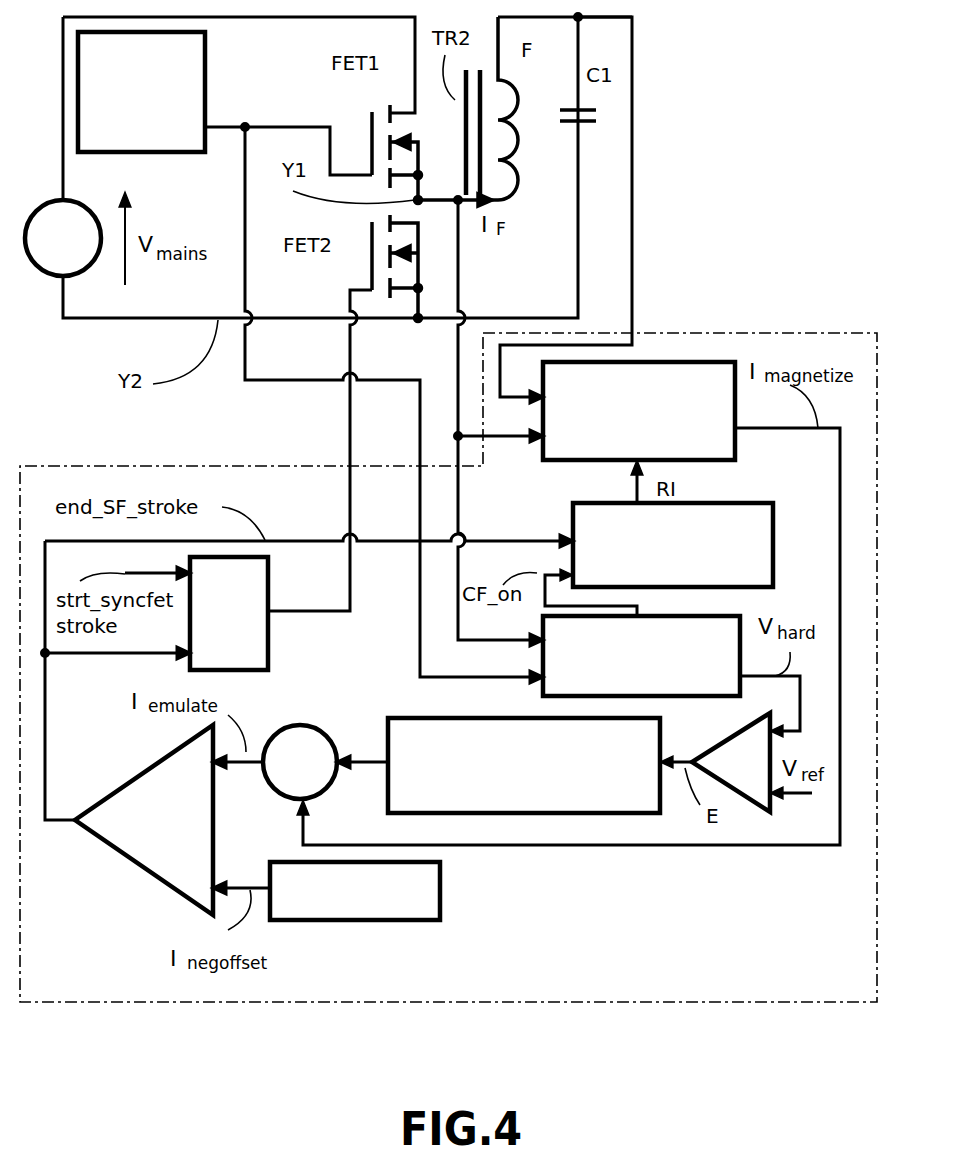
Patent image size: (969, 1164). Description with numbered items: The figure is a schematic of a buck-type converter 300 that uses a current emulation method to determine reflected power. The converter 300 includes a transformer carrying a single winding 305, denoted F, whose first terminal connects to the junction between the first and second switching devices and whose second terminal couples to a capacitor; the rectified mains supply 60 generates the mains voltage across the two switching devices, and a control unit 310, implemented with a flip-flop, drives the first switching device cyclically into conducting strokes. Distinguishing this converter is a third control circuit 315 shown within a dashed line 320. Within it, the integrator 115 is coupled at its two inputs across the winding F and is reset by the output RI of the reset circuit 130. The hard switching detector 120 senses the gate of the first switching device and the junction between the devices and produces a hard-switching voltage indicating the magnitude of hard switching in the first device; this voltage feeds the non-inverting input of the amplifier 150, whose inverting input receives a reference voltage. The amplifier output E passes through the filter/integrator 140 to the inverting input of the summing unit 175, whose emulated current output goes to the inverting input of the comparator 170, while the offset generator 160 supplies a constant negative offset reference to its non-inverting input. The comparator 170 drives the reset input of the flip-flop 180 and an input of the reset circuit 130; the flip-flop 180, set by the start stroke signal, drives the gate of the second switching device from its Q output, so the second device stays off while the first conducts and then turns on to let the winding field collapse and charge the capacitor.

The rectified mains supply 60 is at (50, 245).
The buck-type converter 300 is at (722, 150).
The single winding 305 is at (518, 160).
The control unit 310 is at (147, 122).
The third control circuit 315 is at (722, 341).
The dashed line 320 is at (152, 1000).
The integrator 115 is at (639, 411).
The hard switching detector 120 is at (641, 656).
The reset circuit 130 is at (673, 545).
The filter/integrator 140 is at (524, 765).
The amplifier 150 is at (758, 795).
The offset generator 160 is at (368, 900).
The comparator 170 is at (144, 820).
The summing unit 175 is at (283, 768).
The flip-flop 180 is at (258, 640).